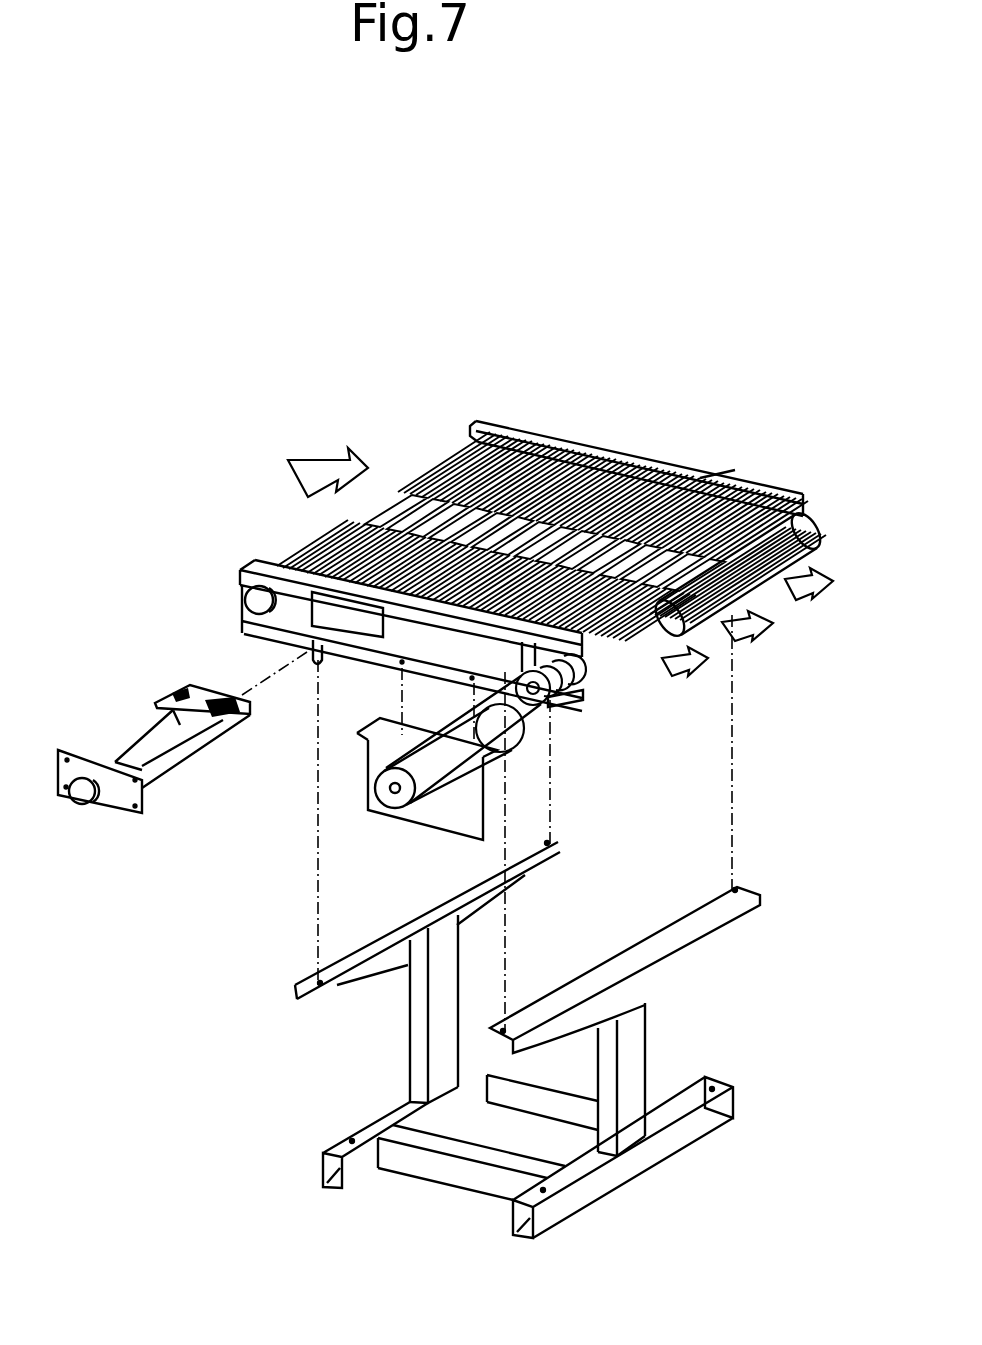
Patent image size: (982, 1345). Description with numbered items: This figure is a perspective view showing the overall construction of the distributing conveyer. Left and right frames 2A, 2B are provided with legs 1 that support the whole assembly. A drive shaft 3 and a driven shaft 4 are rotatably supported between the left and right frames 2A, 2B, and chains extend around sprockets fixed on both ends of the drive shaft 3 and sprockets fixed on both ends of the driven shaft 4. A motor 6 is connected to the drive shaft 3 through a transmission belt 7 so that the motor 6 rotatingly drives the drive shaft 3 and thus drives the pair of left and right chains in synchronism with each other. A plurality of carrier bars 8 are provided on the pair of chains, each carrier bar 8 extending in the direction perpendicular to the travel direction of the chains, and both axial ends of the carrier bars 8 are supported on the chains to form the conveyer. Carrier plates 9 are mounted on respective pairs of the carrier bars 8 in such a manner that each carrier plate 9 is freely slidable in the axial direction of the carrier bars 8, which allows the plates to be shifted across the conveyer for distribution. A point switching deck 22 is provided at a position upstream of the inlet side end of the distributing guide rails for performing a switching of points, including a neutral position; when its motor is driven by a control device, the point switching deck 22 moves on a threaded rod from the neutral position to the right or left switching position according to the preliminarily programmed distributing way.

The legs 1 is at (657, 1044).
The left frame 2A is at (657, 472).
The right frame 2B is at (403, 638).
The drive shaft 3 is at (597, 690).
The driven shaft 4 is at (246, 600).
The motor 6 is at (517, 743).
The transmission belt 7 is at (450, 790).
The carrier bars 8 is at (703, 478).
The carrier plates 9 is at (405, 493).
The point switching deck 22 is at (155, 806).